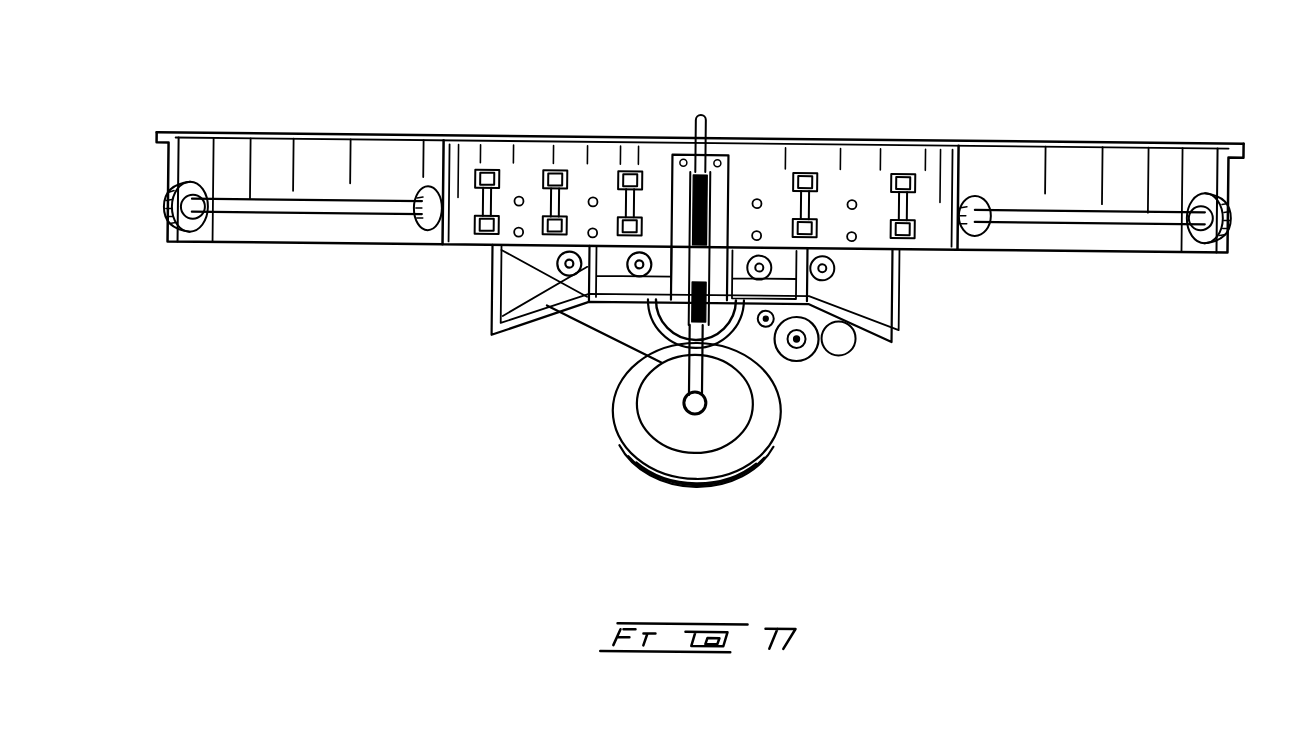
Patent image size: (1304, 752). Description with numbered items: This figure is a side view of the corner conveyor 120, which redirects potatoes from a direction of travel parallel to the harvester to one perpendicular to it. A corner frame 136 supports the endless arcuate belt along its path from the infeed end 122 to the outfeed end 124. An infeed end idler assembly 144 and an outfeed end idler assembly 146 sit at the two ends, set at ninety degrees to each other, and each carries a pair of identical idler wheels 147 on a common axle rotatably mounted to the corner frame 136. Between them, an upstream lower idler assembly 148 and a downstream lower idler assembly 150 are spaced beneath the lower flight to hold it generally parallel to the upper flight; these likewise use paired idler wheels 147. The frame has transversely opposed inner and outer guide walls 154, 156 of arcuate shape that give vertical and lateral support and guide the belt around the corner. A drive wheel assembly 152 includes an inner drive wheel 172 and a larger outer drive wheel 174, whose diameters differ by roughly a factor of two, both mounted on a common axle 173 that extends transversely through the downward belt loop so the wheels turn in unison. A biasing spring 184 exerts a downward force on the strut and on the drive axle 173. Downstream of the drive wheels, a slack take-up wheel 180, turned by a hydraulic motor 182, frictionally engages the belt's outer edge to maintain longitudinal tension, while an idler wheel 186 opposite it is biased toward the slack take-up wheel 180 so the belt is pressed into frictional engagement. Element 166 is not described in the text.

The corner conveyor 120 is at (792, 108).
The infeed end 122 is at (1192, 265).
The outfeed end 124 is at (255, 262).
The corner frame 136 is at (945, 250).
The infeed end idler assembly 144 is at (1102, 218).
The outfeed end idler assembly 146 is at (245, 217).
The idler wheels 147 is at (183, 194).
The upstream lower idler assembly 148 is at (520, 307).
The downstream lower idler assembly 150 is at (840, 267).
The drive wheel assembly 152 is at (713, 377).
The inner guide wall 154 is at (470, 142).
The outer guide wall 156 is at (332, 154).
The fastener bolts 166 is at (628, 168).
The inner drive wheel 172 is at (653, 313).
The common axle 173 is at (688, 386).
The outer drive wheel 174 is at (628, 432).
The slack take-up wheel 180 is at (806, 362).
The hydraulic motor 182 is at (856, 346).
The biasing spring 184 is at (683, 140).
The idler wheel 186 is at (762, 330).